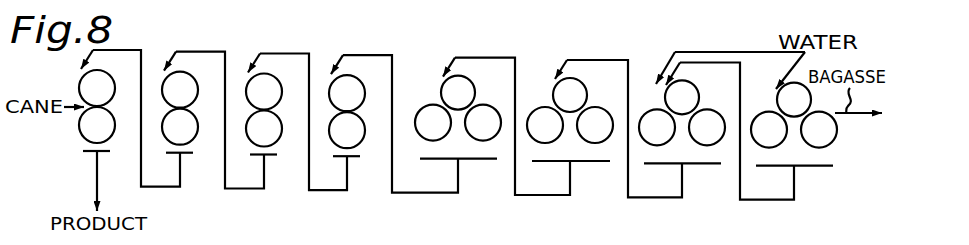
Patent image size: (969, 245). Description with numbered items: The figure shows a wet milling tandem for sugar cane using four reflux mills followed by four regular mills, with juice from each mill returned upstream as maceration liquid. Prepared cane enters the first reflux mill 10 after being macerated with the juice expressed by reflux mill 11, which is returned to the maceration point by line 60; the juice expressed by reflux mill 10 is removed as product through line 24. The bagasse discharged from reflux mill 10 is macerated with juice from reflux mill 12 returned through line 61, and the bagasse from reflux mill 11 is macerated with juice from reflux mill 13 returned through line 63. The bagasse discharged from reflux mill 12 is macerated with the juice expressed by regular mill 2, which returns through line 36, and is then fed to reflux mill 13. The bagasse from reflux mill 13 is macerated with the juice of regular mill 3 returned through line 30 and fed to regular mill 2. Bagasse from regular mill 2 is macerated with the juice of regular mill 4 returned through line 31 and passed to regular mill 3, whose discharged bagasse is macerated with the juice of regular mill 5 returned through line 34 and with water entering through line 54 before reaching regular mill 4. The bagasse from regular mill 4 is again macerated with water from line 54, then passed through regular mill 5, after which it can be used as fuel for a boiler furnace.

The reflux mill 10 is at (90, 98).
The reflux mill 11 is at (173, 100).
The reflux mill 12 is at (257, 102).
The reflux mill 13 is at (340, 103).
The regular mill 2 is at (452, 103).
The regular mill 3 is at (564, 105).
The regular mill 4 is at (676, 107).
The regular mill 5 is at (788, 110).
The product line 24 is at (97, 182).
The juice return line 60 is at (160, 187).
The juice return line 61 is at (250, 189).
The juice return line 63 is at (328, 191).
The juice return line 36 is at (432, 193).
The juice return line 30 is at (543, 196).
The juice return line 31 is at (657, 198).
The juice return line 34 is at (768, 200).
The water line 54 is at (714, 52).